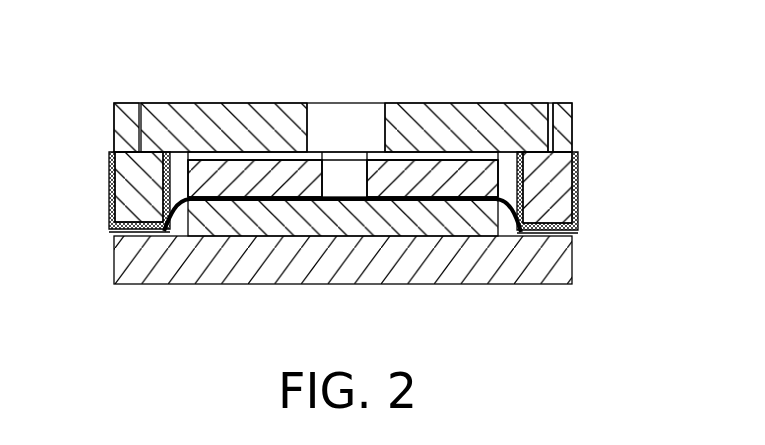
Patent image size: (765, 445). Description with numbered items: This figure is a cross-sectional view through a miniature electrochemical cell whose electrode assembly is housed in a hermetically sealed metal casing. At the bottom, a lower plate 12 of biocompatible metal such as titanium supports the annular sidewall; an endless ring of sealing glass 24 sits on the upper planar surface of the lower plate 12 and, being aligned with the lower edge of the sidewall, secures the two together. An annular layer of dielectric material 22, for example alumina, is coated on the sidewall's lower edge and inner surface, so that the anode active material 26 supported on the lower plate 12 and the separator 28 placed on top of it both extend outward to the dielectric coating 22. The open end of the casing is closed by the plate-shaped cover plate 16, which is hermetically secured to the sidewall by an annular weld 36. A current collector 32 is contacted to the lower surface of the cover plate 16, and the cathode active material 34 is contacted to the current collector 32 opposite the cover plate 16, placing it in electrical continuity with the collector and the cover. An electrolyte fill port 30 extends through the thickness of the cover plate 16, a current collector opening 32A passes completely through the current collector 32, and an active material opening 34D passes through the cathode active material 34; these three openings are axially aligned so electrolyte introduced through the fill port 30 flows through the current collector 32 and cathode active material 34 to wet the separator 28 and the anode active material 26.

The lower plate 12 is at (143, 262).
The cover plate 16 is at (170, 103).
The dielectric layer 22 is at (107, 190).
The sealing glass 24 is at (571, 235).
The anode active material 26 is at (215, 220).
The separator 28 is at (517, 184).
The electrolyte fill port 30 is at (308, 140).
The current collector 32 is at (483, 150).
The current collector opening 32A is at (323, 152).
The cathode active material 34 is at (252, 188).
The active material opening 34D is at (366, 171).
The annular weld 36 is at (549, 103).